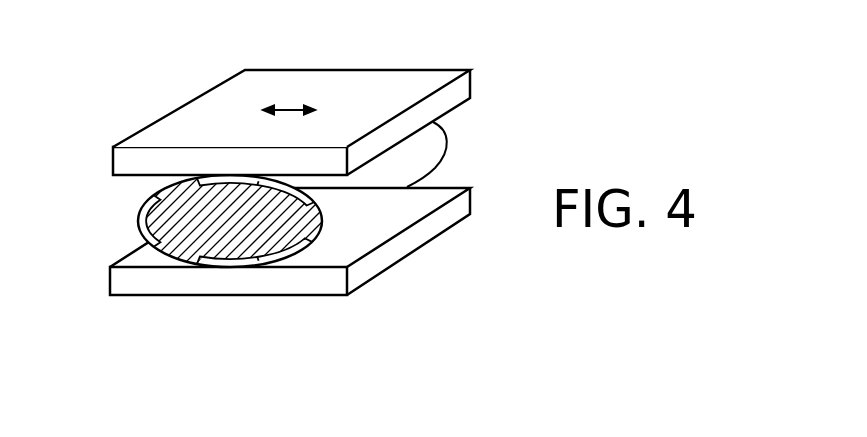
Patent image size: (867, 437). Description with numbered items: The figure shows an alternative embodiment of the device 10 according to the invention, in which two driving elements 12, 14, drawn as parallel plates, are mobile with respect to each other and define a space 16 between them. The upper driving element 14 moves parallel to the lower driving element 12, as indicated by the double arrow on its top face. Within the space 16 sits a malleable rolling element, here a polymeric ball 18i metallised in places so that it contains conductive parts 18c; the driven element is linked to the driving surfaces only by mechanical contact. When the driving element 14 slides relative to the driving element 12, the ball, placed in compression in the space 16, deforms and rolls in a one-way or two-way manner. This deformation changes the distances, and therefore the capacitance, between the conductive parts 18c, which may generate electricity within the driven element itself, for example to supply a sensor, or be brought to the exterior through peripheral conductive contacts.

The device 10 is at (512, 83).
The driving element 12 is at (127, 277).
The driving element 14 is at (123, 163).
The space 16 is at (462, 171).
The conductive parts 18c is at (163, 197).
The polymeric ball 18i is at (150, 222).